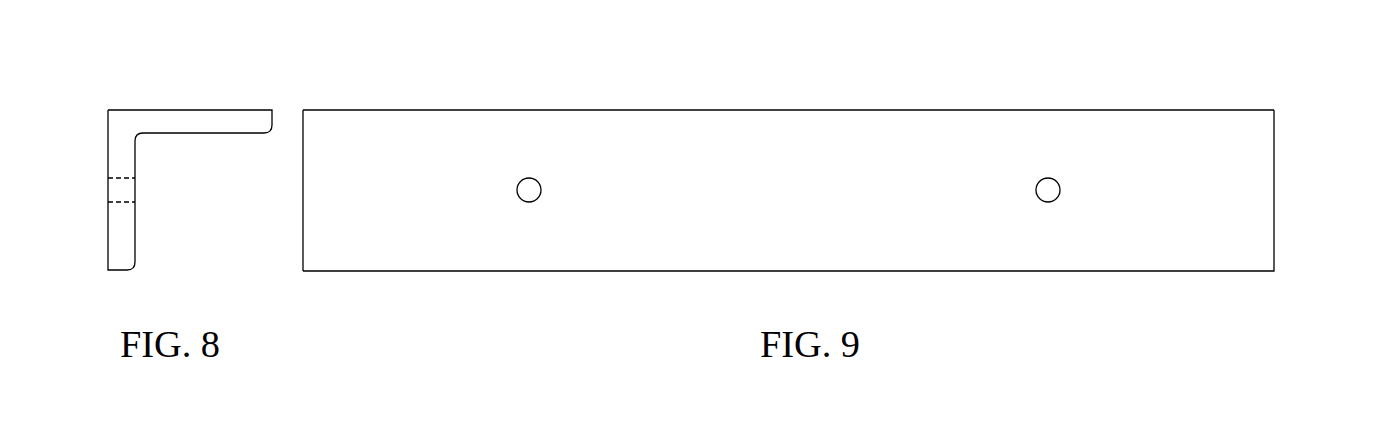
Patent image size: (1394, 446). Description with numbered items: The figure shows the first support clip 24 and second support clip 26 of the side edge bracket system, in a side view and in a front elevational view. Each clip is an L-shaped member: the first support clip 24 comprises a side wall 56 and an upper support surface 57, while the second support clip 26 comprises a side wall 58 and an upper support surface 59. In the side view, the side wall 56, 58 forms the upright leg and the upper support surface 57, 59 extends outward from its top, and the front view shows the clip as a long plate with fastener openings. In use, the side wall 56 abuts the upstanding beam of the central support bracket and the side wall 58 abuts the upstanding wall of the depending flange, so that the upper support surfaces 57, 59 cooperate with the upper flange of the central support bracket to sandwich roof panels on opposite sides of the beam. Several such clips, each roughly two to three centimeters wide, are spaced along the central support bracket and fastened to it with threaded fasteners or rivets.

In FIG. 8, the first support clip 24 is at (149, 154).
In FIG. 9, the first support clip 24 is at (784, 155).
In FIG. 8, the second support clip 26 is at (149, 154).
In FIG. 9, the second support clip 26 is at (784, 155).
In FIG. 8, the side wall 56 is at (81, 190).
In FIG. 9, the side wall 56 is at (251, 190).
In FIG. 8, the side wall 58 is at (113, 152).
In FIG. 9, the side wall 58 is at (289, 261).
In FIG. 8, the upper support surface 57 is at (190, 90).
In FIG. 9, the upper support surface 57 is at (788, 74).
In FIG. 8, the upper support surface 59 is at (190, 97).
In FIG. 9, the upper support surface 59 is at (1155, 97).